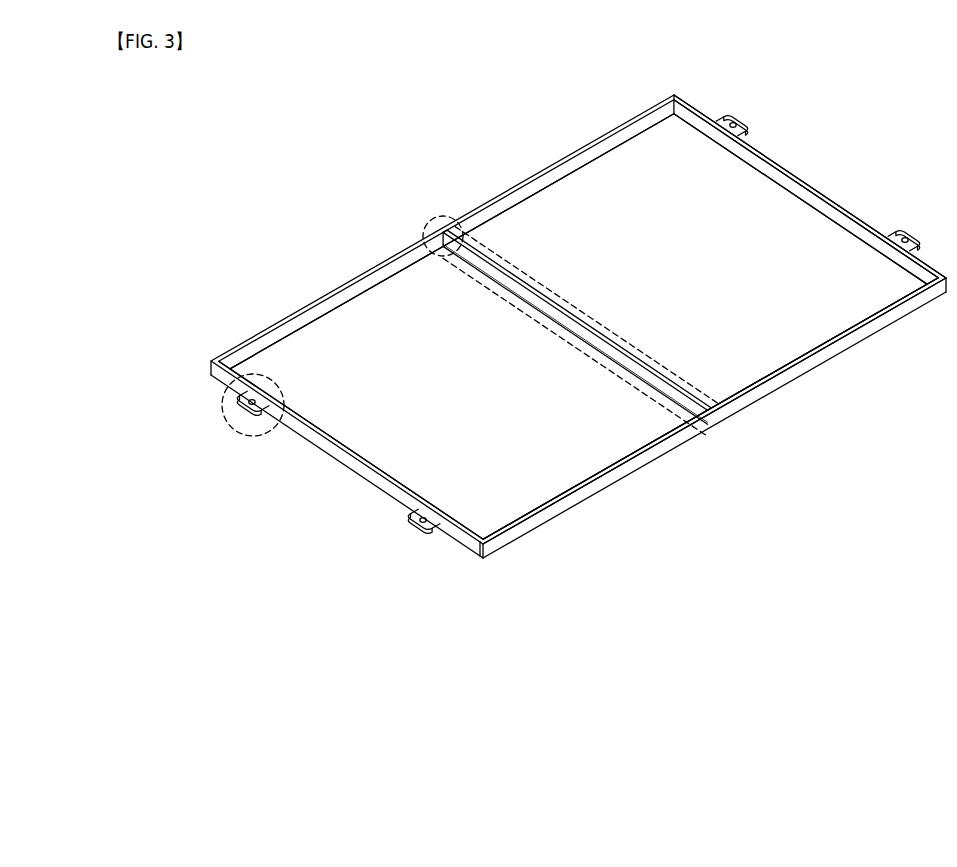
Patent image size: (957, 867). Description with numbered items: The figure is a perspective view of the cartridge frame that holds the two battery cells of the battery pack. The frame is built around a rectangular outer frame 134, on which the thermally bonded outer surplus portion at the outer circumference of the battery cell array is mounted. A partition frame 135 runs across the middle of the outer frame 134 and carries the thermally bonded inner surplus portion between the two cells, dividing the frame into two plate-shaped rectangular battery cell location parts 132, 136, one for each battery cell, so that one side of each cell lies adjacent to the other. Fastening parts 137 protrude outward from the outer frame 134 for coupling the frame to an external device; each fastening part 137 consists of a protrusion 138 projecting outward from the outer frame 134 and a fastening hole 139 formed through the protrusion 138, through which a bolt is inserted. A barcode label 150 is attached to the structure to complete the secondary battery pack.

The barcode label 150 is at (352, 241).
The battery cell location part 132 is at (610, 450).
The outer frame 134 is at (553, 512).
The partition frame 135 is at (720, 428).
The battery cell location part 136 is at (788, 347).
The fastening part 137 is at (222, 395).
The protrusion 138 is at (248, 427).
The fastening hole 139 is at (238, 414).